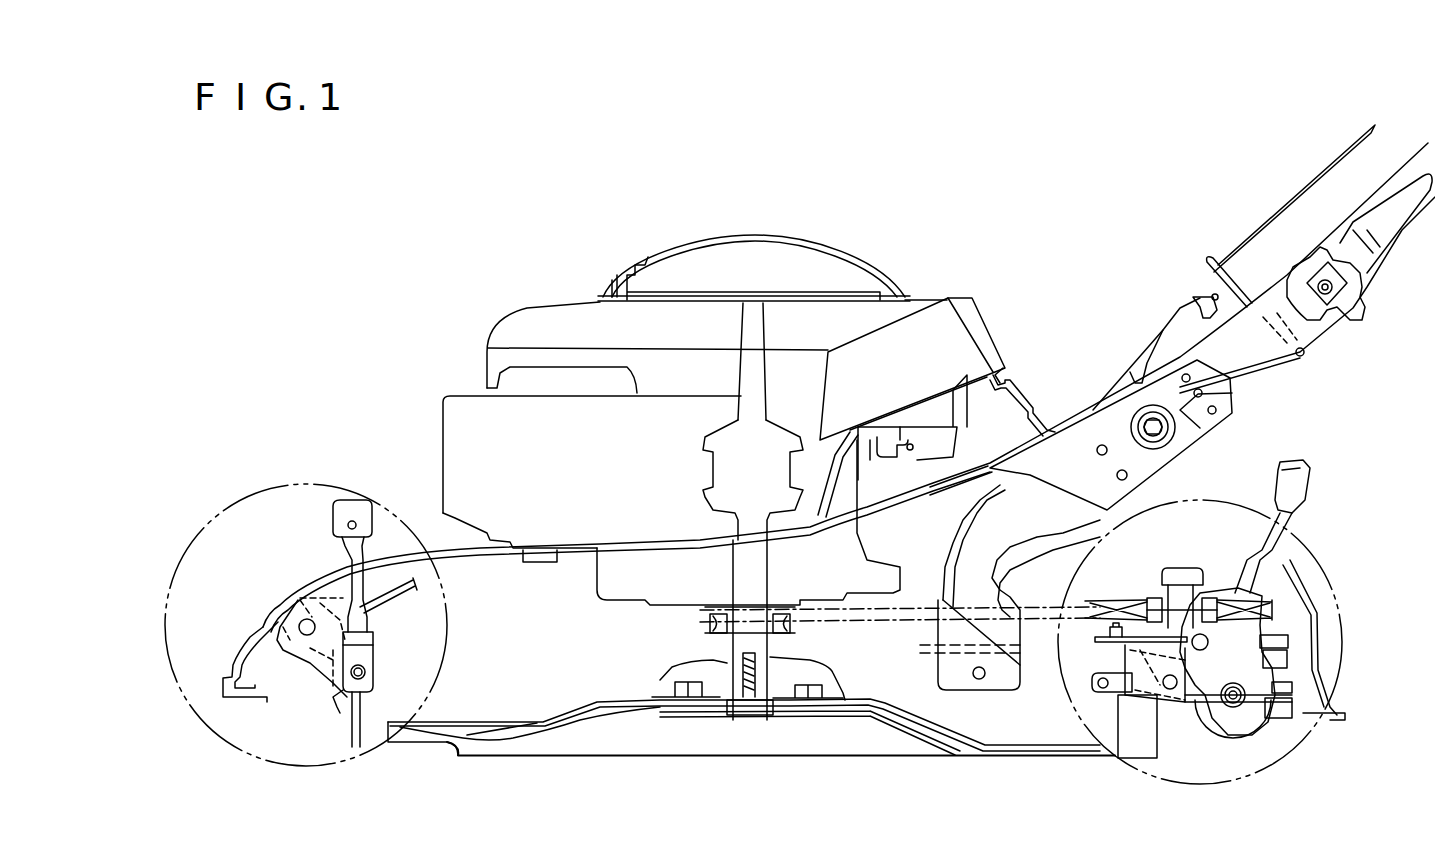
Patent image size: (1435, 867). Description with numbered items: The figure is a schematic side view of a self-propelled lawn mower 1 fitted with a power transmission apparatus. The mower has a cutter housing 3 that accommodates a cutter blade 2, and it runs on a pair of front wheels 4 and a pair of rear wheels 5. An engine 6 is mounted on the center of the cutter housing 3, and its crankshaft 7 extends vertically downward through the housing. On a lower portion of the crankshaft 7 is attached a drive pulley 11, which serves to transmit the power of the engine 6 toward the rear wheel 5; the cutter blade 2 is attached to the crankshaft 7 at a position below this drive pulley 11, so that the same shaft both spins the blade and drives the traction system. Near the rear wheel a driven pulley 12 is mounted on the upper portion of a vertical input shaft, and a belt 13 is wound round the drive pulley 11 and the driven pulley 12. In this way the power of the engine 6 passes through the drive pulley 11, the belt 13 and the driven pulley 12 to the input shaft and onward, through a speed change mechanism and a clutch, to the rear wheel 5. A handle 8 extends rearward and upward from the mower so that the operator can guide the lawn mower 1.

The lawn mower 1 is at (438, 305).
The cutter blade 2 is at (536, 716).
The cutter housing 3 is at (448, 546).
The front wheels 4 is at (240, 490).
The rear wheels 5 is at (1335, 560).
The engine 6 is at (621, 480).
The crankshaft 7 is at (756, 573).
The handle 8 is at (1408, 145).
The drive pulley 11 is at (708, 625).
The driven pulley 12 is at (1137, 598).
The belt 13 is at (910, 623).